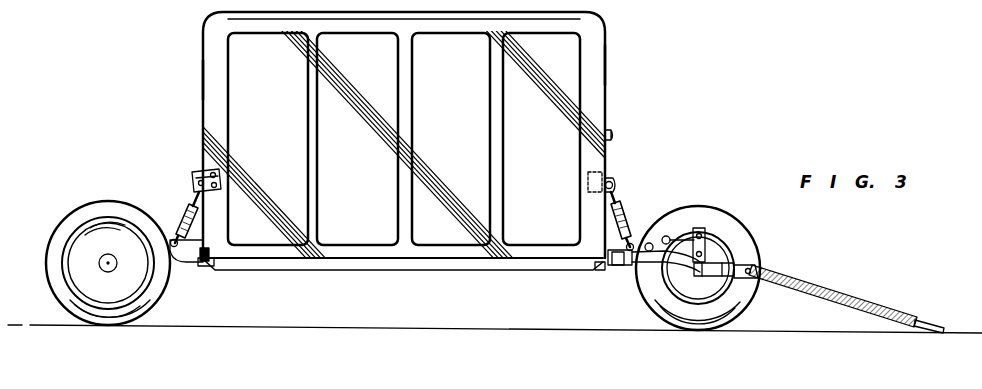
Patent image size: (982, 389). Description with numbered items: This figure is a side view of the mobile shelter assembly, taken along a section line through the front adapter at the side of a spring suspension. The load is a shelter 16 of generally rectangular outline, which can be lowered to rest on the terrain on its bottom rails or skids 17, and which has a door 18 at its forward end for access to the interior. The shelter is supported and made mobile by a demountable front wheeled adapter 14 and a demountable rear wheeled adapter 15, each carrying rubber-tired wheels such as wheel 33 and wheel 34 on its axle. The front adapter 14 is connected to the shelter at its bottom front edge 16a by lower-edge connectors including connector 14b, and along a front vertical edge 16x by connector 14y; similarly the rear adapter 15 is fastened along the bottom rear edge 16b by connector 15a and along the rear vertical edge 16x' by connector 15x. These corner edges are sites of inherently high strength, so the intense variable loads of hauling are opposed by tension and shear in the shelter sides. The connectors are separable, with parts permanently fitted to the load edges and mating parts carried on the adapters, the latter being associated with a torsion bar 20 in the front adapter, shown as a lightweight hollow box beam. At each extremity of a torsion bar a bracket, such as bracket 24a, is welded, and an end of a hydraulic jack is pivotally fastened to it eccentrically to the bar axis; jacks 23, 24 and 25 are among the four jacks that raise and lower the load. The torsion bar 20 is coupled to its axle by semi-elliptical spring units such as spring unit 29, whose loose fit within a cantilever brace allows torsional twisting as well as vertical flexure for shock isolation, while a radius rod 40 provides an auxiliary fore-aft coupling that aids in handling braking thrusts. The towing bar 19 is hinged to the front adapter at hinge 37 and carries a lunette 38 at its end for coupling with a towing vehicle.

The front wheeled adapter 14 is at (672, 132).
The connector 14b is at (599, 272).
The connector 14y is at (650, 162).
The rear wheeled adapter 15 is at (126, 152).
The connector 15a is at (203, 266).
The connector 15x is at (272, 162).
The shelter 16 is at (460, 88).
The bottom front edge 16a is at (597, 253).
The bottom rear edge 16b is at (268, 230).
The front vertical edge 16x is at (633, 59).
The rear vertical edge 16x' is at (175, 74).
The bottom rails or skids 17 is at (466, 268).
The door 18 is at (645, 114).
The towing bar 19 is at (828, 296).
The torsion bar 20 is at (622, 266).
The hydraulic jack 23 is at (623, 214).
The hydraulic jack 24 is at (181, 207).
The bracket 24a is at (182, 266).
The hydraulic jack 25 is at (722, 263).
The semi-elliptical spring unit 29 is at (652, 245).
The rubber-tired wheel 33 is at (752, 300).
The rubber-tired wheel 34 is at (100, 236).
The hinge 37 is at (752, 268).
The lunette 38 is at (933, 324).
The radius rod 40 is at (700, 228).